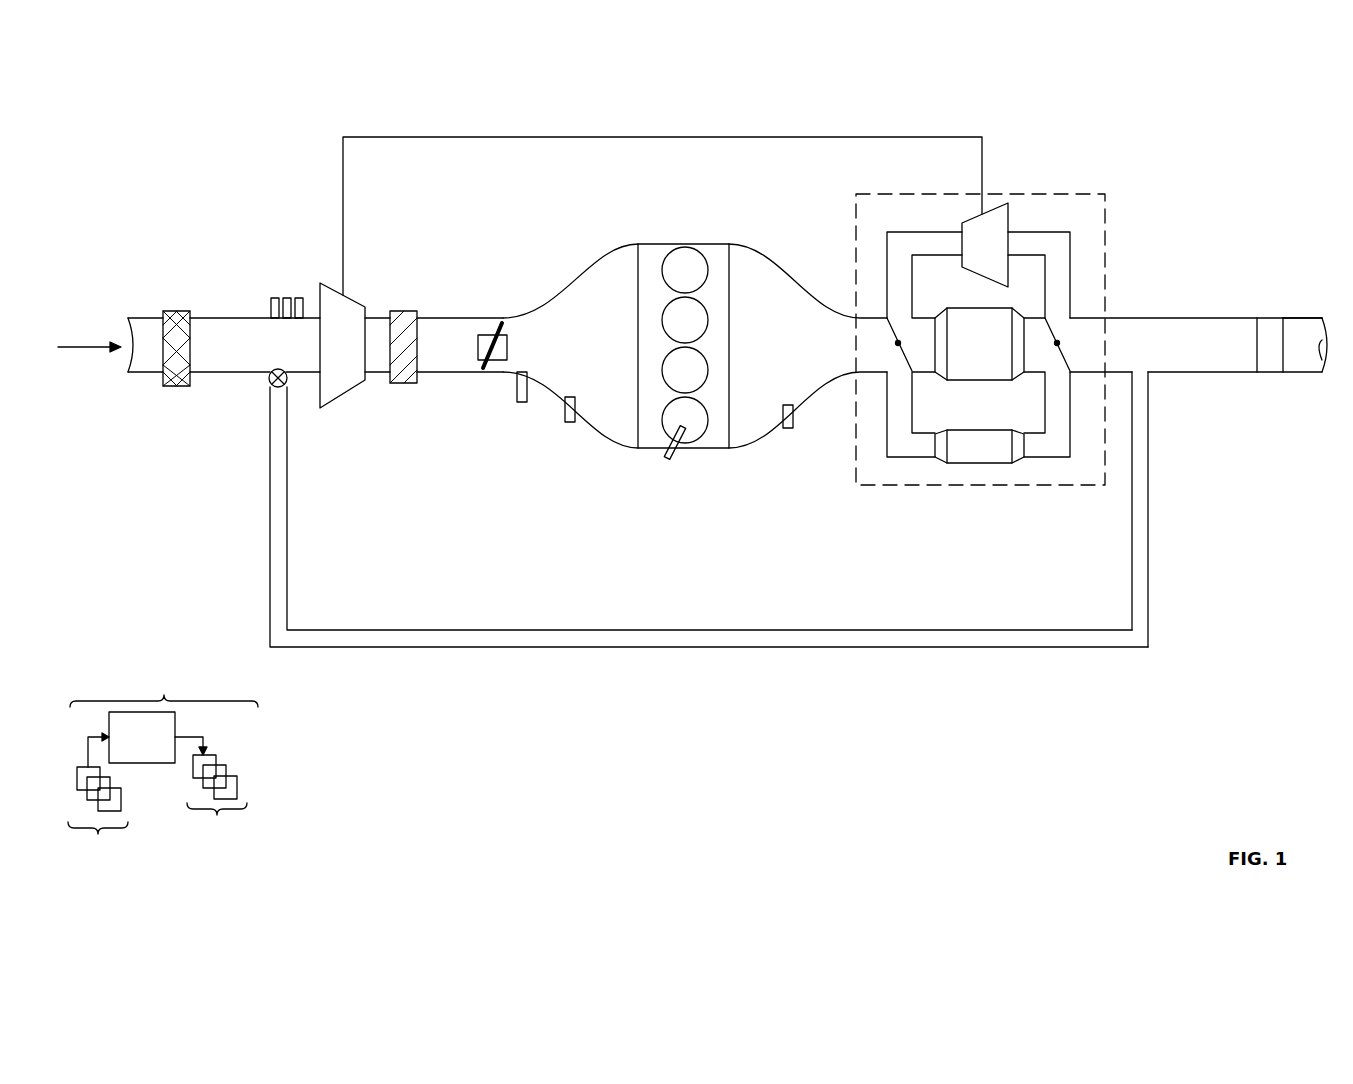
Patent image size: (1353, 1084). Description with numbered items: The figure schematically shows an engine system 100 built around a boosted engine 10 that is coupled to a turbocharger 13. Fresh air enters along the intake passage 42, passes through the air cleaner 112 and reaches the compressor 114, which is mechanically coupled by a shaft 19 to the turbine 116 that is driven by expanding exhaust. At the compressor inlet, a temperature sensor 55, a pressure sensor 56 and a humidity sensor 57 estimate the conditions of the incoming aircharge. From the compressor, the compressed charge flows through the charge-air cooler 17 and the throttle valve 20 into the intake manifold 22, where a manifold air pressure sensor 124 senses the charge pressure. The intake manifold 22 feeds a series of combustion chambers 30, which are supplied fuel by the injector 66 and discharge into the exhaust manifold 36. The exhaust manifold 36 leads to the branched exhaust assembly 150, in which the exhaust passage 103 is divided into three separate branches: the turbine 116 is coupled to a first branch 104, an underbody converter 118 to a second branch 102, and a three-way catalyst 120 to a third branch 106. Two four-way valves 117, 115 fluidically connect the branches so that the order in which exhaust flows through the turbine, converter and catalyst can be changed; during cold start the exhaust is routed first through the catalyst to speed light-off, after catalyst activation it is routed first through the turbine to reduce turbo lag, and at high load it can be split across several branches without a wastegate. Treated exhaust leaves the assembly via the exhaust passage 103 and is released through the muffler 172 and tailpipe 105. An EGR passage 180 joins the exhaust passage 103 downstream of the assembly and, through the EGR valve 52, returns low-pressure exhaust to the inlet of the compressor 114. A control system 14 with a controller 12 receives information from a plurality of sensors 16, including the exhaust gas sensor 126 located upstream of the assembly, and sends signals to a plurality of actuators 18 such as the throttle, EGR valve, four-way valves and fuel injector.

The engine 10 is at (729, 327).
The engine system 100 is at (1203, 198).
The controller 12 is at (142, 737).
The turbocharger 13 is at (336, 418).
The control system 14 is at (164, 666).
The sensors 16 is at (105, 801).
The charge air cooler 17 is at (405, 311).
The actuators 18 is at (223, 801).
The shaft 19 is at (643, 137).
The throttle valve 20 is at (503, 360).
The intake manifold 22 is at (527, 346).
The combustion chambers 30 is at (702, 258).
The exhaust manifold 36 is at (808, 346).
The intake passage 42 is at (131, 373).
The EGR valve 52 is at (268, 380).
The temperature sensor 55 is at (275, 298).
The pressure sensor 56 is at (287, 298).
The humidity sensor 57 is at (299, 298).
The fuel injector 66 is at (678, 452).
The second branch 102 is at (916, 316).
The exhaust passage 103 is at (1165, 374).
The first branch 104 is at (1020, 232).
The tailpipe 105 is at (1300, 372).
The third branch 106 is at (922, 433).
The air cleaner 112 is at (170, 311).
The compressor 114 is at (342, 345).
The four-way valve 115 is at (1064, 362).
The turbine 116 is at (985, 245).
The four-way valve 117 is at (902, 353).
The underbody converter 118 is at (979, 344).
The three-way catalyst 120 is at (979, 446).
The manifold air pressure sensor 124 is at (565, 414).
The exhaust gas sensor 126 is at (517, 392).
The branched exhaust assembly 150 is at (1034, 175).
The muffler 172 is at (1270, 316).
The EGR passage 180 is at (708, 630).